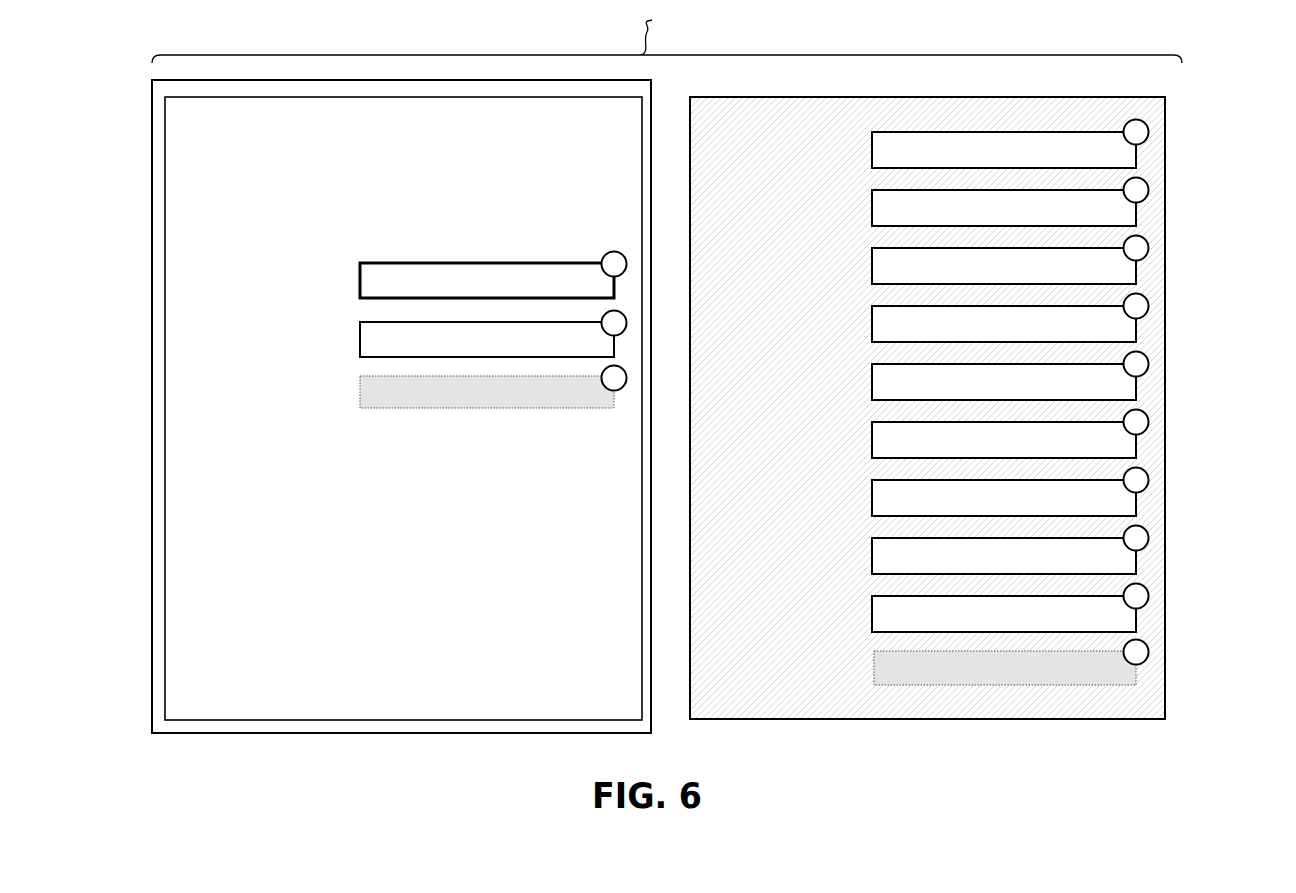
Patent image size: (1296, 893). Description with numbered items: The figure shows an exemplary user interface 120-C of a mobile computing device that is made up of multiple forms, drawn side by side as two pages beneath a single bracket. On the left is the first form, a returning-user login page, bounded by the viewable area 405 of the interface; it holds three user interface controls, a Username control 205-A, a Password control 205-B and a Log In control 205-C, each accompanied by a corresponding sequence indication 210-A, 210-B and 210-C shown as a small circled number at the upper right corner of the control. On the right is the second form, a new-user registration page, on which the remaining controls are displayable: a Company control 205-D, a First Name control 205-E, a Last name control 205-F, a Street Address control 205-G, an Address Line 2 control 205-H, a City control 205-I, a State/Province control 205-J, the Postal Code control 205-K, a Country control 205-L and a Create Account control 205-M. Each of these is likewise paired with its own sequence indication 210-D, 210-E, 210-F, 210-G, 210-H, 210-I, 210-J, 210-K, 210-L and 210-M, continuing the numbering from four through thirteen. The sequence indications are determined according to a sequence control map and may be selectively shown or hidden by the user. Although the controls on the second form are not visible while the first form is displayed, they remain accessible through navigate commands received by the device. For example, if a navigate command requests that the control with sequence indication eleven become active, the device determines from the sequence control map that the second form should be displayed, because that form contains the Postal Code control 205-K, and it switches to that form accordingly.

The user interface 120-C is at (695, 394).
The viewable area 405 is at (375, 735).
The user interface control 205-A is at (359, 266).
The user interface control 205-B is at (360, 352).
The user interface control 205-C is at (360, 392).
The user interface control 205-D is at (872, 168).
The user interface control 205-E is at (872, 226).
The user interface control 205-F is at (872, 284).
The user interface control 205-G is at (872, 342).
The user interface control 205-H is at (872, 400).
The user interface control 205-I is at (872, 458).
The user interface control 205-J is at (872, 516).
The Postal Code control 205-K is at (872, 574).
The user interface control 205-L is at (872, 632).
The user interface control 205-M is at (874, 681).
The sequence indication 210-A is at (611, 251).
The sequence indication 210-B is at (621, 312).
The sequence indication 210-C is at (626, 391).
The sequence indication 210-D is at (1149, 132).
The sequence indication 210-E is at (1149, 190).
The sequence indication 210-F is at (1149, 248).
The sequence indication 210-G is at (1149, 306).
The sequence indication 210-H is at (1149, 364).
The sequence indication 210-I is at (1149, 422).
The sequence indication 210-J is at (1149, 480).
The sequence indication 210-K is at (1149, 538).
The sequence indication 210-L is at (1149, 596).
The sequence indication 210-M is at (1149, 652).